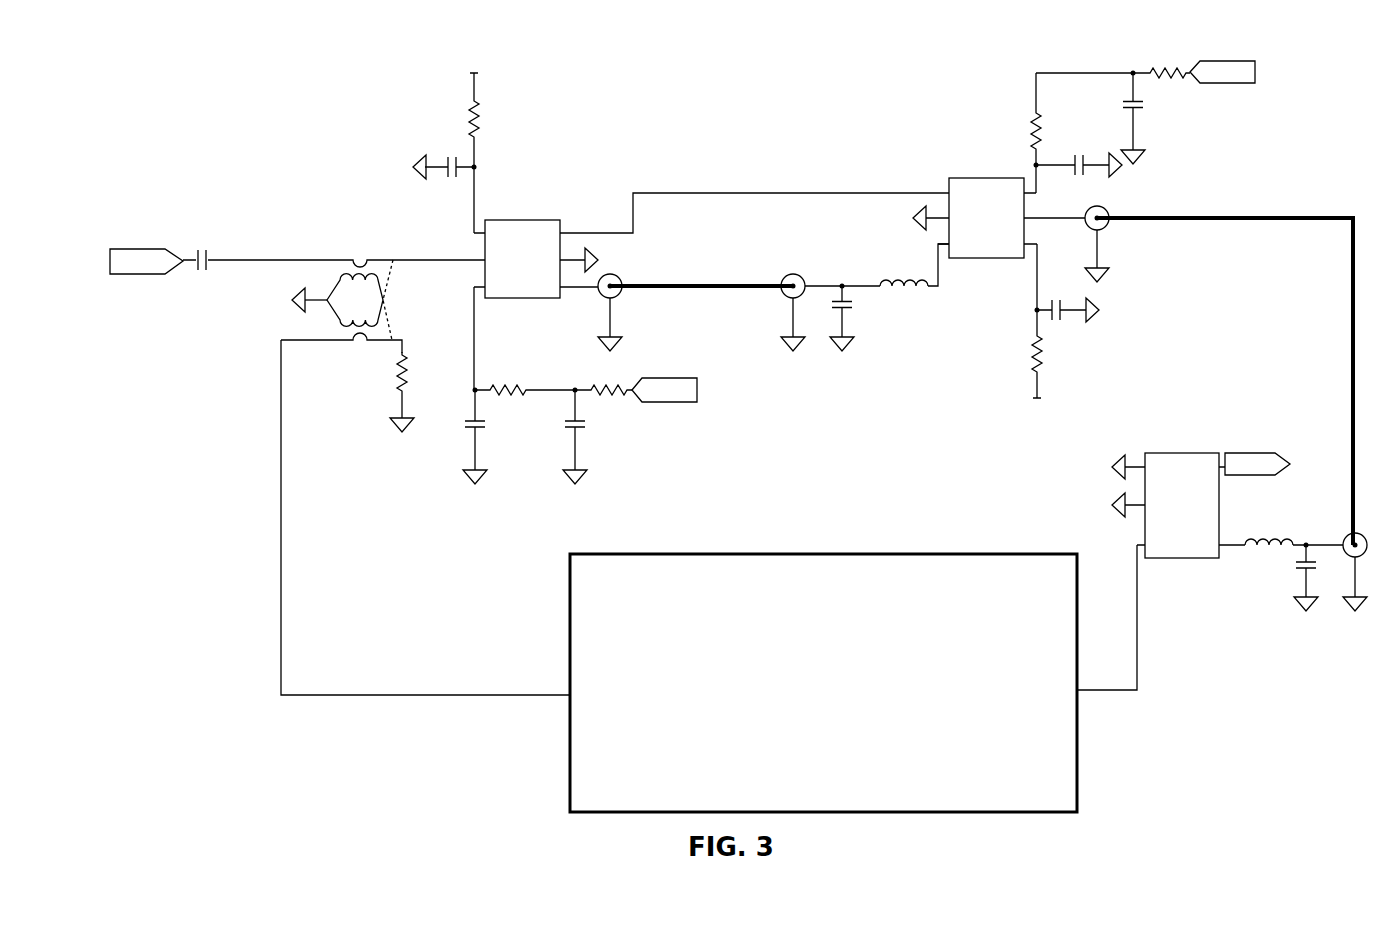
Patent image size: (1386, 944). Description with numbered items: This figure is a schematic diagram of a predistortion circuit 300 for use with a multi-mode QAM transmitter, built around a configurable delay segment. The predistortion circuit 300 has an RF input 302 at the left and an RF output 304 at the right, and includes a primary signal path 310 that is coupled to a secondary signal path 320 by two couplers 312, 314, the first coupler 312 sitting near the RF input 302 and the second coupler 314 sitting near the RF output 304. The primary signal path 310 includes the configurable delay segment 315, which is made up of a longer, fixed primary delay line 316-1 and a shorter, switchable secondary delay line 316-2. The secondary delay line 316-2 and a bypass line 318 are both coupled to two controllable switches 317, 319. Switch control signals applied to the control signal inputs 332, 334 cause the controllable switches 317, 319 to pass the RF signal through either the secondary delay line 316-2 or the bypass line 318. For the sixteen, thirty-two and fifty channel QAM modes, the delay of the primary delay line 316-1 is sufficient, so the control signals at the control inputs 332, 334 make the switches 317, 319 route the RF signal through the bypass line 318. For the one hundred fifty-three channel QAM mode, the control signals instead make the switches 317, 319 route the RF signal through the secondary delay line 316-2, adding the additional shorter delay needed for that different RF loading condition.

The predistortion circuit 300 is at (232, 138).
The RF input 302 is at (157, 243).
The RF output 304 is at (1257, 452).
The primary signal path 310 is at (396, 100).
The coupler 312 is at (309, 237).
The coupler 314 is at (1172, 428).
The configurable delay segment 315 is at (785, 90).
The primary delay line 316-1 is at (1212, 220).
The secondary delay line 316-2 is at (707, 287).
The controllable switch 317 is at (530, 220).
The bypass line 318 is at (743, 192).
The controllable switch 319 is at (980, 178).
The secondary signal path 320 is at (253, 465).
The control signal input 332 is at (668, 402).
The control signal input 334 is at (1220, 83).